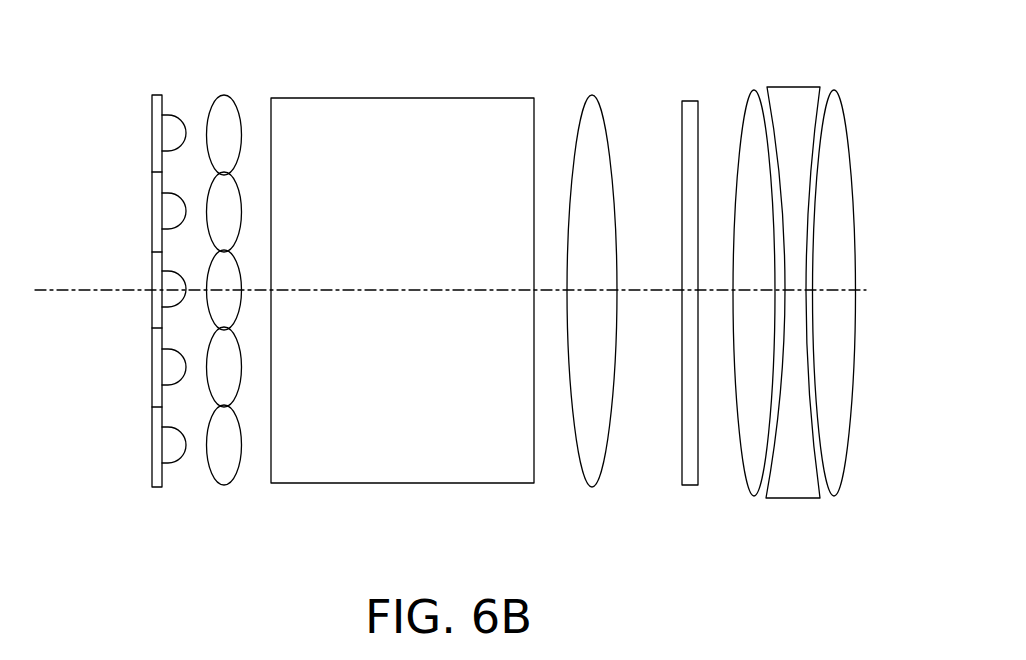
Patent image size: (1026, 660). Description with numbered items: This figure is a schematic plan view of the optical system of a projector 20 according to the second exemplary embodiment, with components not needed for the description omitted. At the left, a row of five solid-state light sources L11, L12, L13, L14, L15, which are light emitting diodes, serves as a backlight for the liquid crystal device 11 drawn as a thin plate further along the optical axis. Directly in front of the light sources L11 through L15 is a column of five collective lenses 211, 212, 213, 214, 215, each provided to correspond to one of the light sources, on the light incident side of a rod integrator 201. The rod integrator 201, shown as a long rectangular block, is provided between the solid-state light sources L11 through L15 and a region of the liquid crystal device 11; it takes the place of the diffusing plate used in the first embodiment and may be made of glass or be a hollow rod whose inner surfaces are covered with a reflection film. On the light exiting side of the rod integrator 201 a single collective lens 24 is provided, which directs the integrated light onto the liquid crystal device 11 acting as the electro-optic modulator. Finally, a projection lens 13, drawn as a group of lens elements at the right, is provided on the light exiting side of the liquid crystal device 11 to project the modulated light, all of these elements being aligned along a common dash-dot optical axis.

The projector 20 is at (403, 53).
The solid-state light source L11 is at (170, 445).
The solid-state light source L12 is at (170, 367).
The solid-state light source L13 is at (170, 289).
The solid-state light source L14 is at (170, 211).
The solid-state light source L15 is at (170, 133).
The collective lens 211 is at (220, 457).
The collective lens 212 is at (233, 381).
The collective lens 213 is at (220, 300).
The collective lens 214 is at (228, 202).
The collective lens 215 is at (220, 133).
The rod integrator 201 is at (432, 453).
The collective lens 24 is at (592, 488).
The liquid crystal device 11 is at (688, 486).
The projection lens 13 is at (807, 499).